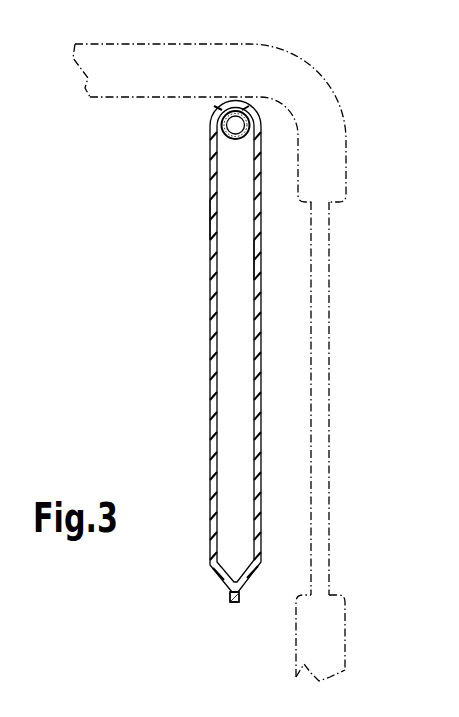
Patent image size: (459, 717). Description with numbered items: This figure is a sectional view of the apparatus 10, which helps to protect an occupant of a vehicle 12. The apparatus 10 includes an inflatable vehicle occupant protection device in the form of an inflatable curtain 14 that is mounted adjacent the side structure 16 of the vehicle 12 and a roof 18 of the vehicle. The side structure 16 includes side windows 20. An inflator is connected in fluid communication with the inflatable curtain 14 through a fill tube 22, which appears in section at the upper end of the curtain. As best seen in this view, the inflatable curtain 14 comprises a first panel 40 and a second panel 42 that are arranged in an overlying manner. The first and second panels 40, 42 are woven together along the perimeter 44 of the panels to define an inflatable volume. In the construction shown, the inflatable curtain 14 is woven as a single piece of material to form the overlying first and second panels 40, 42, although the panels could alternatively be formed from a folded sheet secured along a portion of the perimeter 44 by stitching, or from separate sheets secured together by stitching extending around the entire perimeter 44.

The apparatus 10 is at (147, 202).
The vehicle 12 is at (327, 61).
The inflatable curtain 14 is at (211, 340).
The side structure 16 is at (325, 175).
The roof 18 is at (143, 70).
The side windows 20 is at (322, 473).
The fill tube 22 is at (221, 149).
The first panel 40 is at (255, 258).
The second panel 42 is at (213, 219).
The perimeter 44 is at (232, 602).